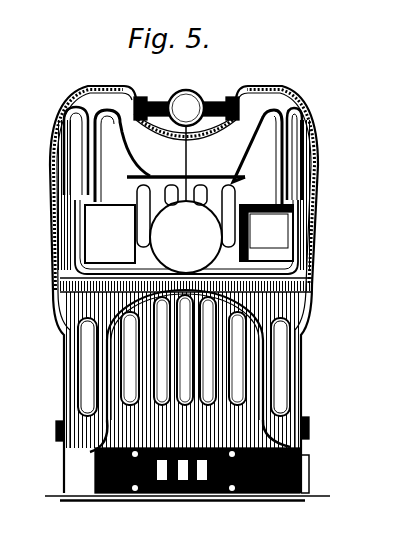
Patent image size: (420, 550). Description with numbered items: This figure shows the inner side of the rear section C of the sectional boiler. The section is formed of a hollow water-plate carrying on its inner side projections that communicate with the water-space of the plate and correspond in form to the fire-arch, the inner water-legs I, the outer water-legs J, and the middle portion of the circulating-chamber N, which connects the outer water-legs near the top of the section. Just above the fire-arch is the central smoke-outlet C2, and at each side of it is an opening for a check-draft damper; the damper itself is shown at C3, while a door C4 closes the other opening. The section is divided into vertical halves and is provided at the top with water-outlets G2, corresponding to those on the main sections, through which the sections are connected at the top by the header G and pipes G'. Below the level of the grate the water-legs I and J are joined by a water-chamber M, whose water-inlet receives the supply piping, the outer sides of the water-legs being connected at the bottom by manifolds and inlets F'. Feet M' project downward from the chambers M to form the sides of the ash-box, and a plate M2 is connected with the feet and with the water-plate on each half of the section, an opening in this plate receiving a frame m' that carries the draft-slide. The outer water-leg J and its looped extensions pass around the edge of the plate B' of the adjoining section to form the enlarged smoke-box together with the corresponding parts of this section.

The water-outlet G2 is at (146, 97).
The header G is at (187, 97).
The pipe G' is at (224, 94).
The outer water-leg J is at (58, 150).
The plate B' is at (188, 289).
The door C4 is at (110, 234).
The central smoke-outlet C2 is at (186, 237).
The check-draft damper C3 is at (263, 234).
The circulating-chamber N is at (78, 296).
The inner water-leg I is at (90, 390).
The inlet F' is at (43, 428).
The water-chamber M is at (305, 437).
The foot M' is at (302, 474).
The frame m' is at (149, 497).
The plate M2 is at (260, 490).